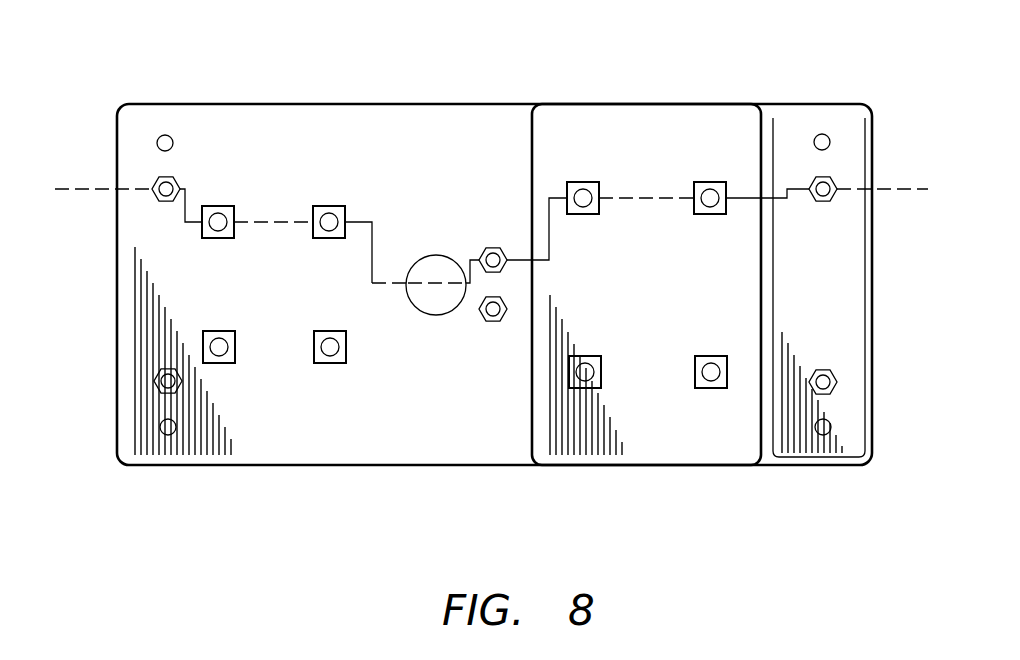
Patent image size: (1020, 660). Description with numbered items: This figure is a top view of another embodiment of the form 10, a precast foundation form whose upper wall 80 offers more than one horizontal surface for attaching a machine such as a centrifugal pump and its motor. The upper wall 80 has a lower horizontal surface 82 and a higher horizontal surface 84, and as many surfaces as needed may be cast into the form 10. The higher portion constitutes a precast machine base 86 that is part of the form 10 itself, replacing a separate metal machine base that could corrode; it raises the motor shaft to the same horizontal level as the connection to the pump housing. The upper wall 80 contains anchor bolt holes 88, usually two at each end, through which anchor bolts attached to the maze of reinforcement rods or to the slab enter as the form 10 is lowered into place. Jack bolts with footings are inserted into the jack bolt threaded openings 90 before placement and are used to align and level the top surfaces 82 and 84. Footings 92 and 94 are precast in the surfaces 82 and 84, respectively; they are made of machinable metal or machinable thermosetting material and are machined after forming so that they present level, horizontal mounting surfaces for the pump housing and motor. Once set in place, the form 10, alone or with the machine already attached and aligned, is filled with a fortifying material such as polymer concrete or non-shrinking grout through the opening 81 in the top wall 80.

The form 10 is at (55, 189).
The upper wall 80 is at (403, 104).
The opening 81 is at (431, 255).
The lower horizontal surface 82 is at (487, 106).
The higher horizontal surface 84 is at (625, 106).
The precast machine base 86 is at (665, 452).
The anchor bolt holes 88 is at (173, 140).
The jack bolt threaded openings 90 is at (176, 180).
The footing 92 is at (326, 238).
The footing 94 is at (698, 214).